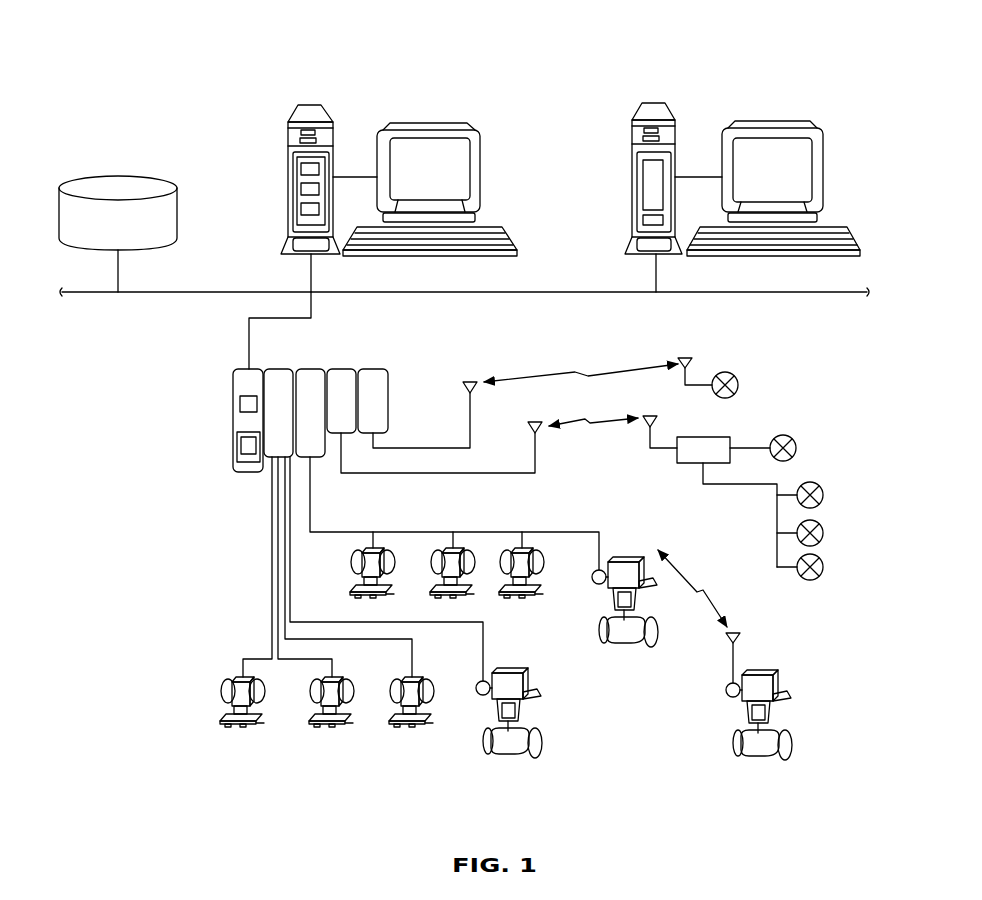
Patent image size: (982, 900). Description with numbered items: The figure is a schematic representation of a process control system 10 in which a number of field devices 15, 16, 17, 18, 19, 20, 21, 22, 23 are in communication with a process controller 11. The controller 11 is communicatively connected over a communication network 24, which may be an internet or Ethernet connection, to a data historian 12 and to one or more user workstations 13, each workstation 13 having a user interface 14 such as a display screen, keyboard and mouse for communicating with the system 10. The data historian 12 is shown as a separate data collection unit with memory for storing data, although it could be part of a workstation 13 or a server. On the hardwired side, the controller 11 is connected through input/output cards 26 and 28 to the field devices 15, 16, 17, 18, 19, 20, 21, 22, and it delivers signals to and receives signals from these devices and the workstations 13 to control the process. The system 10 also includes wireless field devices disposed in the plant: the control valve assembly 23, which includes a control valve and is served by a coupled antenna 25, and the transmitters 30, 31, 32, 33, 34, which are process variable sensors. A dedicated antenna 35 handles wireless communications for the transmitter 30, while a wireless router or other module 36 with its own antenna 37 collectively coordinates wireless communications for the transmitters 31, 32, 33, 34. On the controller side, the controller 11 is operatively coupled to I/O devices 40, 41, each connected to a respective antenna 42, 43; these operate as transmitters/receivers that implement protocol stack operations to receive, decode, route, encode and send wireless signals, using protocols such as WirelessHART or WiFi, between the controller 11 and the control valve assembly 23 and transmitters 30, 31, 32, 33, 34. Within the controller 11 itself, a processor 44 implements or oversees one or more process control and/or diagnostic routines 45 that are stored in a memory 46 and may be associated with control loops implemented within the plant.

The process control system 10 is at (586, 76).
The process controller 11 is at (243, 373).
The data historian 12 is at (178, 213).
The user workstation 13 is at (288, 141).
The user interface 14 is at (482, 160).
The field device 15 is at (240, 712).
The field device 16 is at (327, 712).
The field device 17 is at (408, 712).
The field device 18 is at (500, 705).
The field device 19 is at (378, 548).
The field device 20 is at (455, 548).
The field device 21 is at (522, 548).
The field device 22 is at (625, 560).
The control valve assembly 23 is at (752, 707).
The communication network 24 is at (178, 297).
The antenna 25 is at (742, 642).
The input/output card 26 is at (279, 382).
The input/output card 28 is at (306, 377).
The transmitter 30 is at (739, 383).
The transmitter 31 is at (797, 443).
The transmitter 32 is at (824, 494).
The transmitter 33 is at (824, 532).
The transmitter 34 is at (824, 566).
The antenna 35 is at (693, 362).
The wireless router 36 is at (687, 465).
The antenna 37 is at (658, 428).
The I/O device 40 is at (343, 377).
The I/O device 41 is at (375, 377).
The antenna 42 is at (535, 452).
The antenna 43 is at (471, 410).
The processor 44 is at (238, 400).
The process control and/or diagnostic routine 45 is at (237, 440).
The memory 46 is at (246, 463).